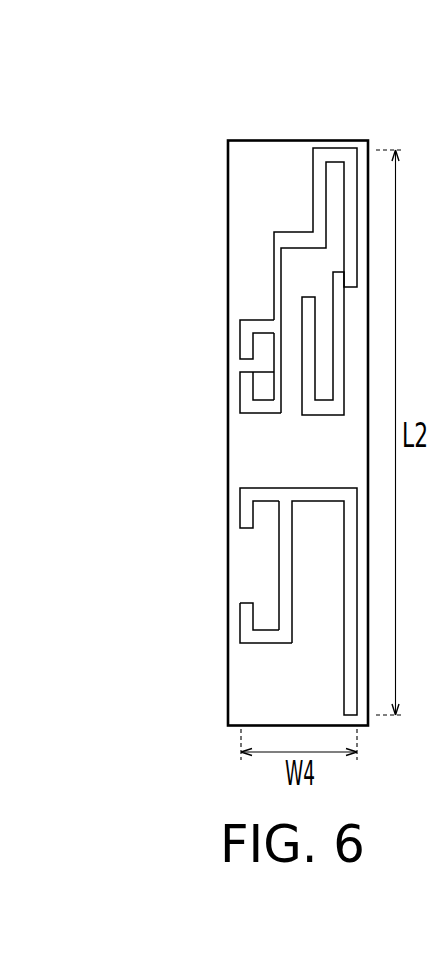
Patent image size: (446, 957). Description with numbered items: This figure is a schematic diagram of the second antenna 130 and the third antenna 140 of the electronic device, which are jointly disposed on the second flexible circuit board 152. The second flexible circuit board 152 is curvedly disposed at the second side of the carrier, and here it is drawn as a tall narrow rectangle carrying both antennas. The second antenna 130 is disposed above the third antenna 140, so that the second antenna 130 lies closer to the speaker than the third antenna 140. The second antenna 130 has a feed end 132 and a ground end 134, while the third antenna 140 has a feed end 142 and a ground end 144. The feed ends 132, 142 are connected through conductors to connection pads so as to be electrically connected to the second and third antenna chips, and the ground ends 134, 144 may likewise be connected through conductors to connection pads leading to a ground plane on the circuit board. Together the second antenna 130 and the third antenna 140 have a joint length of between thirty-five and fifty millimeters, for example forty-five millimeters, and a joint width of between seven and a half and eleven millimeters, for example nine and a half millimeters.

The second flexible circuit board 152 is at (342, 113).
The second antenna 130 is at (352, 232).
The feed end 132 is at (246, 339).
The ground end 134 is at (246, 390).
The third antenna 140 is at (350, 588).
The feed end 142 is at (246, 511).
The ground end 144 is at (246, 617).